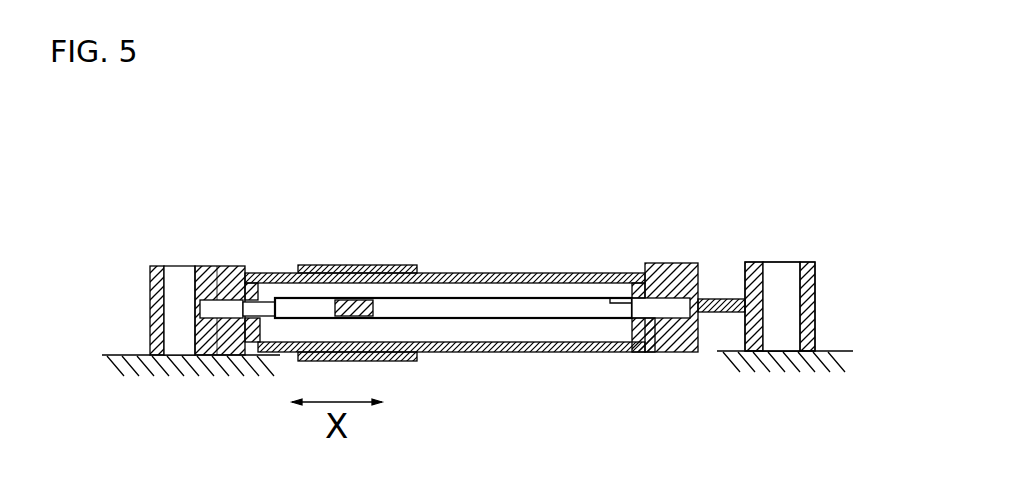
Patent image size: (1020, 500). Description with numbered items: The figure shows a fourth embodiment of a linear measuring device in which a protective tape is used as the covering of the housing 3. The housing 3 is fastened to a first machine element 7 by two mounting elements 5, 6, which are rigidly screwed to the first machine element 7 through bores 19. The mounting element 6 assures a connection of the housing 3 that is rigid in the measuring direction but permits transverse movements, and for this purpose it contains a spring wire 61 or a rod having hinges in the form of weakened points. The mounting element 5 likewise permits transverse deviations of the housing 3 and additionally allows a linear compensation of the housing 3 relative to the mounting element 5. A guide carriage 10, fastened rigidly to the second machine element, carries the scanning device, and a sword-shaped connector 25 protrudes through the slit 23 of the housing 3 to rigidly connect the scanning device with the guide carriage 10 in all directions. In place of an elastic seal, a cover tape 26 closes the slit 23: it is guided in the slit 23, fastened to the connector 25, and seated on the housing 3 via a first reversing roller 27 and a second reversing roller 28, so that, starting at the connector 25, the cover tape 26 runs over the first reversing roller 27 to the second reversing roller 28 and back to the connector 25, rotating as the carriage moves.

The housing 3 is at (521, 352).
The mounting element 5 is at (218, 266).
The mounting element 6 is at (815, 265).
The first machine element 7 is at (141, 370).
The guide carriage 10 is at (332, 266).
The bores 19 is at (175, 313).
The slit 23 is at (515, 298).
The connector 25 is at (368, 302).
The cover tape 26 is at (577, 307).
The first reversing roller 27 is at (222, 352).
The second reversing roller 28 is at (655, 352).
The spring wire 61 is at (722, 298).